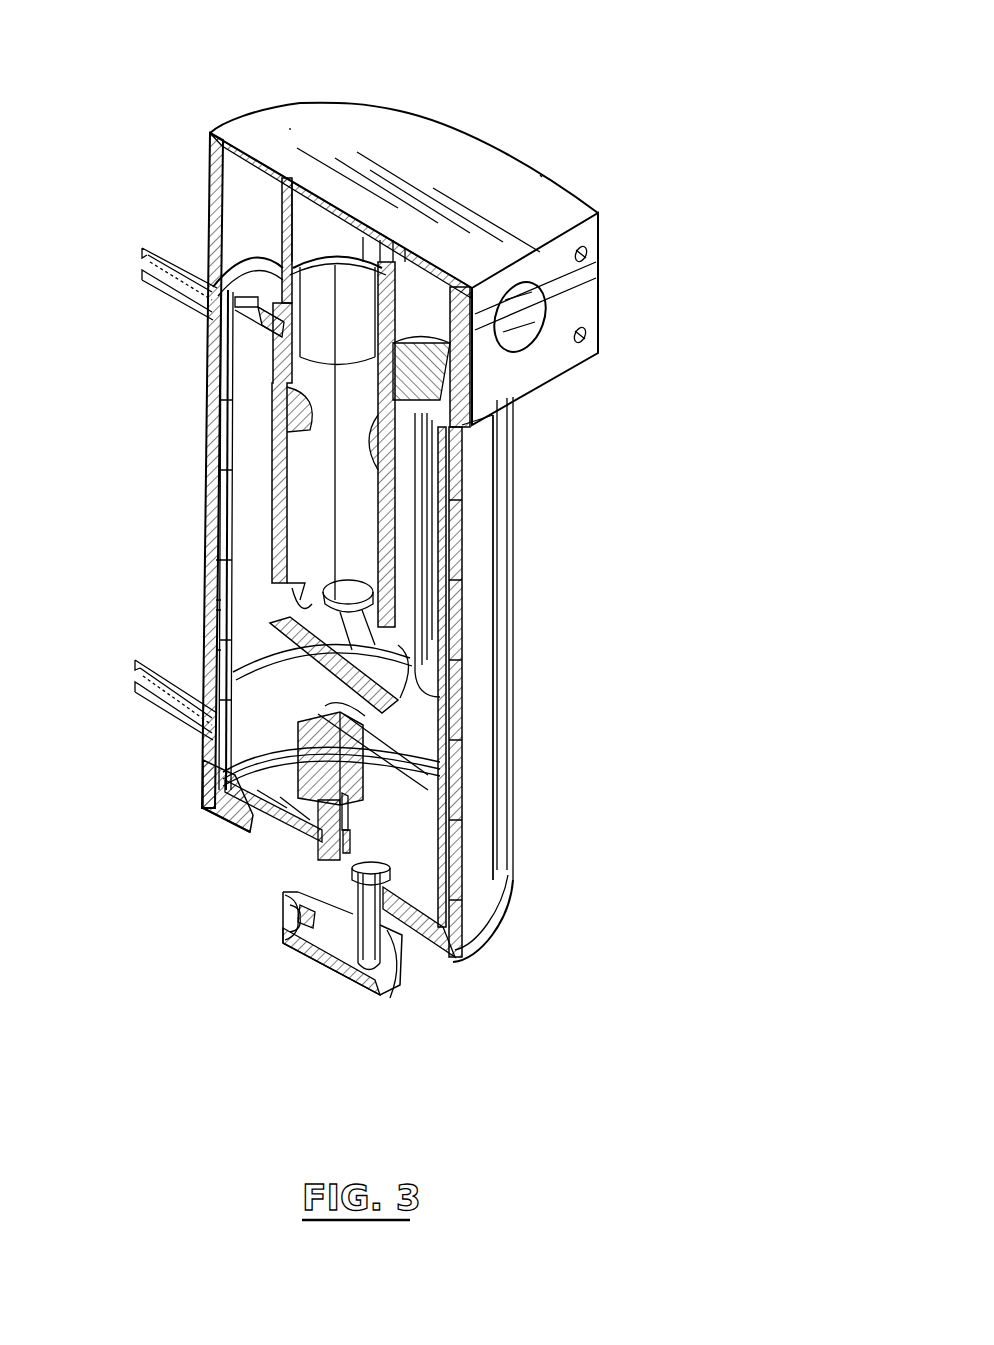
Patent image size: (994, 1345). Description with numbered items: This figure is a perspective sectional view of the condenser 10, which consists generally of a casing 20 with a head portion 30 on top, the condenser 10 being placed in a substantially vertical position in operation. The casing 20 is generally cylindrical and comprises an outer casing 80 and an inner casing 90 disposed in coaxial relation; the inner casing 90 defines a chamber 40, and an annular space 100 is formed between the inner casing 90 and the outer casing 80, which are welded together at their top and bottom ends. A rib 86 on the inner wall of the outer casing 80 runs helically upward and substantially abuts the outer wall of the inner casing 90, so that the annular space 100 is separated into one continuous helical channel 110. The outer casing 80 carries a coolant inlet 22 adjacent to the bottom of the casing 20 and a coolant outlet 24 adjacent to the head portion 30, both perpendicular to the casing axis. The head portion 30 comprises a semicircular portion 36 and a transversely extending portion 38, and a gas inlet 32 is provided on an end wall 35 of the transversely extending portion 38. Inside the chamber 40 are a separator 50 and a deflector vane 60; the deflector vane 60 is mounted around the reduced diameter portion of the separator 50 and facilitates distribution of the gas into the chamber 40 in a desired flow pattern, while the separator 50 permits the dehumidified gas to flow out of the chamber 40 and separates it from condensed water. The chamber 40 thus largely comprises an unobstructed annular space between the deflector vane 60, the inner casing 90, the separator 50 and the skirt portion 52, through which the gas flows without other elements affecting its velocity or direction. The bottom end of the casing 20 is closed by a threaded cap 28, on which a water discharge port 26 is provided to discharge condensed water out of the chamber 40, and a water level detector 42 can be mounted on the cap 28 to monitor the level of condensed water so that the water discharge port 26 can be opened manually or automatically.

The condenser 10 is at (718, 403).
The casing 20 is at (490, 858).
The coolant inlet 22 is at (145, 684).
The coolant outlet 24 is at (142, 265).
The water discharge port 26 is at (380, 992).
The cap 28 is at (230, 822).
The head portion 30 is at (455, 125).
The gas inlet 32 is at (565, 300).
The end wall 35 is at (560, 360).
The semicircular portion 36 is at (290, 130).
The transversely extending portion 38 is at (505, 183).
The chamber 40 is at (255, 478).
The water level detector 42 is at (327, 830).
The separator 50 is at (415, 625).
The skirt portion 52 is at (420, 732).
The deflector vane 60 is at (270, 290).
The outer casing 80 is at (495, 605).
The rib 86 is at (208, 582).
The inner casing 90 is at (458, 500).
The annular space 100 is at (208, 614).
The helical channel 110 is at (212, 408).